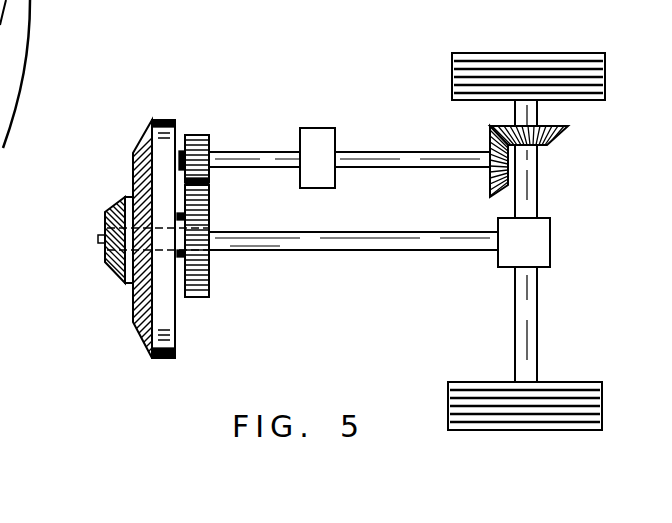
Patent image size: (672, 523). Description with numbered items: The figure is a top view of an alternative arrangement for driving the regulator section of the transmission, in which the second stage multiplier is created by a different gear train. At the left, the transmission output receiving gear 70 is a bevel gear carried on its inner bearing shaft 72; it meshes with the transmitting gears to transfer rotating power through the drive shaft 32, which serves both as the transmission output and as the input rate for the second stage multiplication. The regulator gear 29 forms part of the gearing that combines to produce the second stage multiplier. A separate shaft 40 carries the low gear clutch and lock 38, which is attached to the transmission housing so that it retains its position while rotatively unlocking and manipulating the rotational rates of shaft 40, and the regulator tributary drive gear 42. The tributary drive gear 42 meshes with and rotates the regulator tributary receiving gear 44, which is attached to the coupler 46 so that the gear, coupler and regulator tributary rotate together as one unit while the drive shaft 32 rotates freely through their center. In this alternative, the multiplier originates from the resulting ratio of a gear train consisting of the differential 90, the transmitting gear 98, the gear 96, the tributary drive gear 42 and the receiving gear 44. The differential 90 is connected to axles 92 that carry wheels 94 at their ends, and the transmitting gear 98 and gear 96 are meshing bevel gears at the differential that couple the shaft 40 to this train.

The regulator gear 29 is at (163, 360).
The drive shaft 32 is at (400, 253).
The low gear clutch and lock 38 is at (315, 128).
The shaft 40 is at (255, 152).
The regulator tributary drive gear 42 is at (197, 135).
The regulator tributary receiving gear 44 is at (208, 292).
The coupler 46 is at (178, 262).
The transmission output receiving gear 70 is at (112, 272).
The transmission output receiving gear inner bearing shaft 72 is at (98, 240).
The differential 90 is at (550, 240).
The axle 92 is at (537, 175).
The wheel 94 is at (605, 72).
The gear 96 is at (490, 185).
The transmitting gear 98 is at (568, 130).